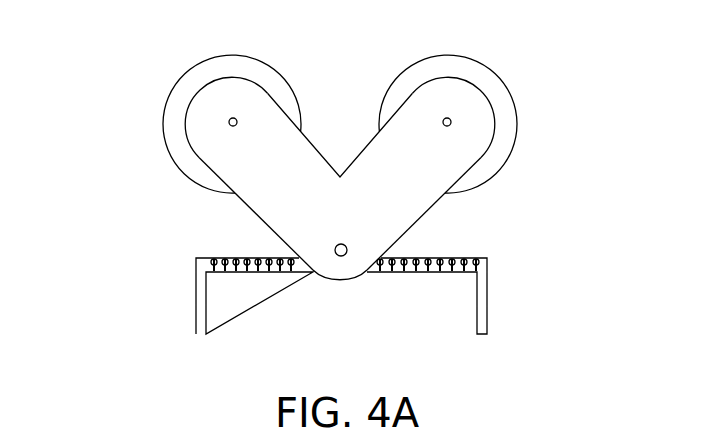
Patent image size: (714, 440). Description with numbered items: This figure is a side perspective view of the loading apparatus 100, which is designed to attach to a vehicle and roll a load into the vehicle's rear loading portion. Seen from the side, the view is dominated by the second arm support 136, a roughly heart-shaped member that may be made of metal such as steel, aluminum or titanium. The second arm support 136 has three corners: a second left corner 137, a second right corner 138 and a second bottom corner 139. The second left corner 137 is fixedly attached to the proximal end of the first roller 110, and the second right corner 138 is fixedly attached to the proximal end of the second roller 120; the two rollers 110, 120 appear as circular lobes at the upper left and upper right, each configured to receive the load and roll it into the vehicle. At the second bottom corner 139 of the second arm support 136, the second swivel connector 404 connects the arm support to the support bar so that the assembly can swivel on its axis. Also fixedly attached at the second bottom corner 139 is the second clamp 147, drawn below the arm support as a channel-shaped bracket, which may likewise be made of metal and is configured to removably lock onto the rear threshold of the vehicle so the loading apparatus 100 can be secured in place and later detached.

The loading apparatus 100 is at (362, 219).
The first roller 110 is at (192, 82).
The second roller 120 is at (482, 72).
The second arm support 136 is at (403, 198).
The second left corner 137 is at (222, 100).
The second right corner 138 is at (468, 98).
The second bottom corner 139 is at (352, 267).
The second clamp 147 is at (212, 265).
The second swivel connector 404 is at (336, 256).